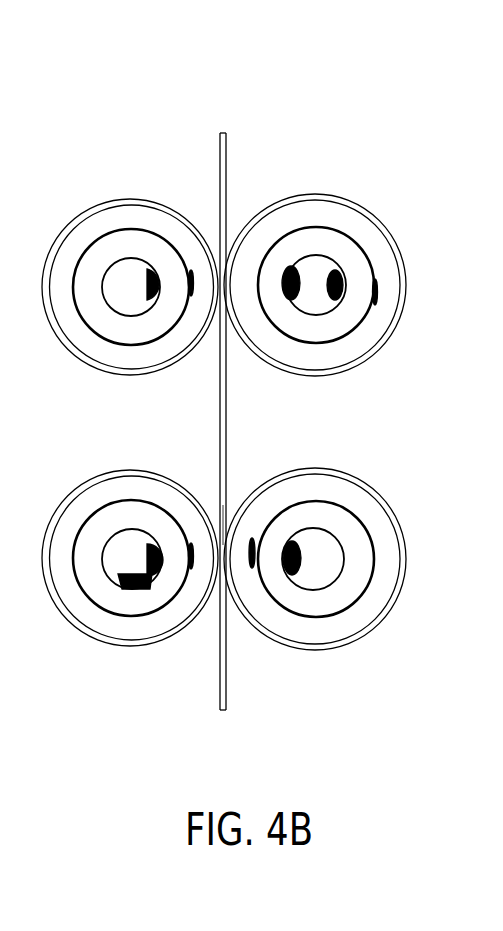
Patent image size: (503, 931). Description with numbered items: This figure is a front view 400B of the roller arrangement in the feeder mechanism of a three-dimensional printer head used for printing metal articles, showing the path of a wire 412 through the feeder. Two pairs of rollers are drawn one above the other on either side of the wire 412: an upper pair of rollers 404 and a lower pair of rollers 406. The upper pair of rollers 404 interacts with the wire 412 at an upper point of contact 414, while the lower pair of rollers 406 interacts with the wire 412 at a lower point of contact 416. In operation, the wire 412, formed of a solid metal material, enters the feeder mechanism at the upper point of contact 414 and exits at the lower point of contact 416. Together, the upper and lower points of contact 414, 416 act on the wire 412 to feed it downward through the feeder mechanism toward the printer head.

The front view 400B is at (383, 103).
The upper pair of rollers 404 is at (313, 190).
The lower pair of rollers 406 is at (311, 655).
The wire 412 is at (208, 418).
The upper point of contact 414 is at (228, 320).
The lower point of contact 416 is at (223, 530).